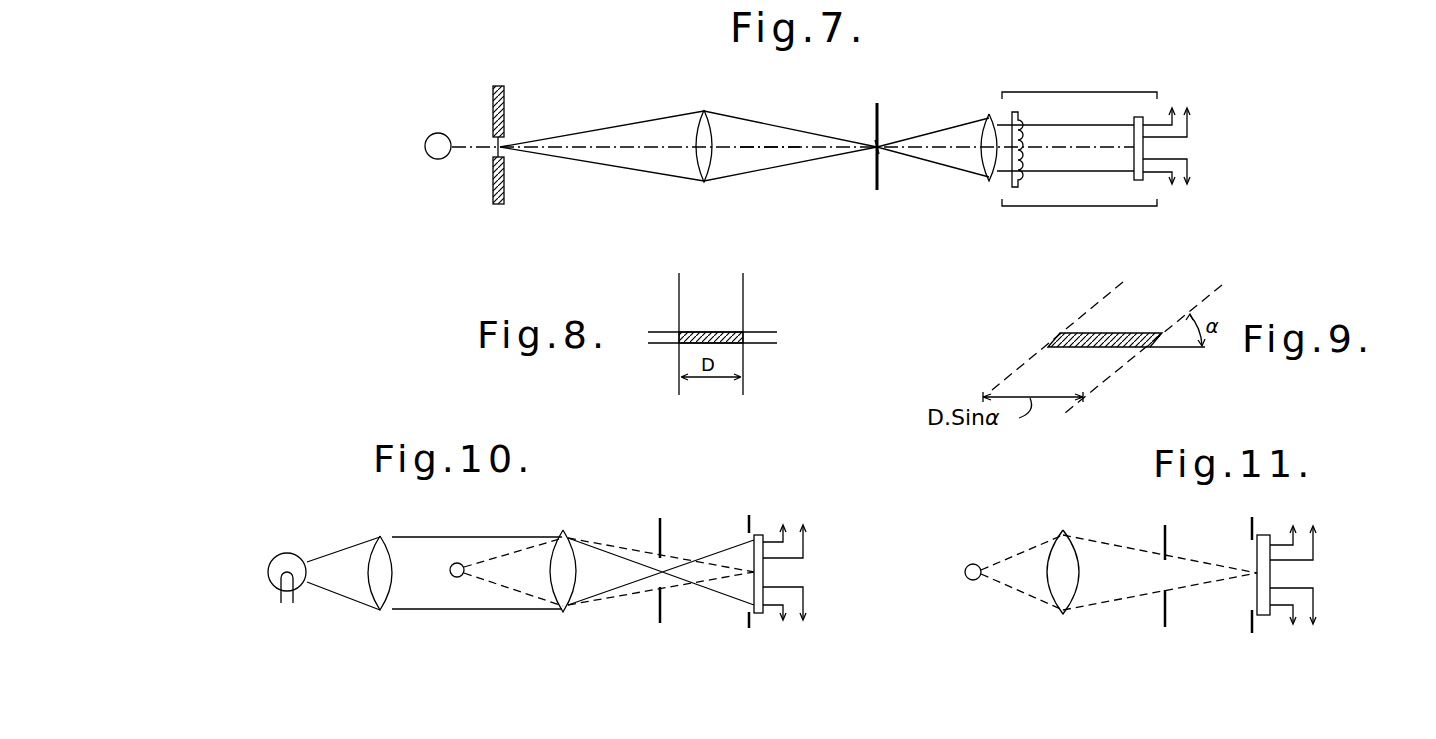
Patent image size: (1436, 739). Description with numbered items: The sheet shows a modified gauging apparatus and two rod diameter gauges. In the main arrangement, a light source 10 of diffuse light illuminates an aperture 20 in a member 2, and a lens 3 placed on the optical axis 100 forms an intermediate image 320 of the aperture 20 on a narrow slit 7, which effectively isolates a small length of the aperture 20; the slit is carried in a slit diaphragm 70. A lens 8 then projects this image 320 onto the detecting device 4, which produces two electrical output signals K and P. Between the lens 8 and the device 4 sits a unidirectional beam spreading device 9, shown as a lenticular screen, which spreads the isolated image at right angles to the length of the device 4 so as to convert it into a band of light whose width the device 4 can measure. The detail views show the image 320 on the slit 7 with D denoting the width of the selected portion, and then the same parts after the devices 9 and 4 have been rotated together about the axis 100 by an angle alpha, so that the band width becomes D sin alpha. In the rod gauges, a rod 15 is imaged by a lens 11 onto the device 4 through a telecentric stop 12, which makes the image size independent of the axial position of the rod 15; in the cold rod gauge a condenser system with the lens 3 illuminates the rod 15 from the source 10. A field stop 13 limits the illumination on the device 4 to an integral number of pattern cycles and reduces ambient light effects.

In FIG. 7, the light source 10 is at (438, 133).
In FIG. 10, the light source 10 is at (280, 554).
In FIG. 7, the member 2 is at (505, 113).
In FIG. 7, the aperture 20 is at (505, 145).
In FIG. 7, the lens 3 is at (708, 135).
In FIG. 10, the lens 3 is at (381, 552).
In FIG. 7, the optical axis 100 is at (770, 149).
In FIG. 7, the slit diaphragm 70 is at (875, 118).
In FIG. 7, the slit 7 is at (880, 154).
In FIG. 8, the slit 7 is at (760, 335).
In FIG. 7, the lens 8 is at (985, 133).
In FIG. 7, the unidirectional beam spreading device 9 is at (1018, 130).
In FIG. 7, the detecting device 4 is at (1143, 147).
In FIG. 10, the detecting device 4 is at (763, 575).
In FIG. 11, the detecting device 4 is at (1270, 575).
In FIG. 8, the intermediate image 320 is at (723, 295).
In FIG. 10, the rod 15 is at (460, 563).
In FIG. 11, the rod 15 is at (970, 563).
In FIG. 10, the lens 11 is at (561, 552).
In FIG. 11, the lens 11 is at (1063, 553).
In FIG. 10, the telecentric stop 12 is at (662, 533).
In FIG. 11, the telecentric stop 12 is at (1168, 540).
In FIG. 10, the field stop 13 is at (748, 533).
In FIG. 11, the field stop 13 is at (1248, 535).